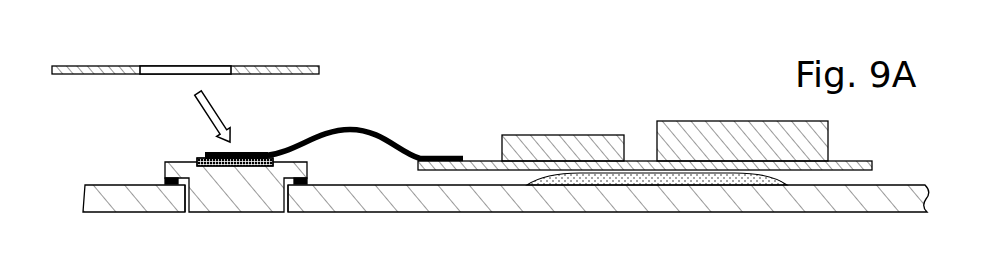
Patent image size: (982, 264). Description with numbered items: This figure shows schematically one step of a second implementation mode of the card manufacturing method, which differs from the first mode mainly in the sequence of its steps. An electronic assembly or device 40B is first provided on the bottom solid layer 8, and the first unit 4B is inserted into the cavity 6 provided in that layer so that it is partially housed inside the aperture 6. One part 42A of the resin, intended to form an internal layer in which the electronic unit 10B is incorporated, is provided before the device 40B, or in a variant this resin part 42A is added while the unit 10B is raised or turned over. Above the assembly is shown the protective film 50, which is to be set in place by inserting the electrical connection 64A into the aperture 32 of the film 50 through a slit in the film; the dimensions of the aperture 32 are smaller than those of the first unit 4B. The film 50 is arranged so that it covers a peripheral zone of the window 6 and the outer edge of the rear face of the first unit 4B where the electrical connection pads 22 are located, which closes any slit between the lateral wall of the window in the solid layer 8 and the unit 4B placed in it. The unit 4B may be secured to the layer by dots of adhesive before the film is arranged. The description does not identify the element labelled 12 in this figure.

The aperture 32 is at (204, 68).
The protective film 50 is at (78, 76).
The electrical connection 64A is at (395, 140).
The electronic assembly or device 40B is at (527, 118).
The electronic unit 10B is at (692, 109).
The cavity 6 is at (182, 203).
The first unit 4B is at (218, 200).
The electrical connection pads 22 is at (246, 168).
The bottom solid layer 8 is at (508, 200).
The resin part 42A is at (632, 178).
The circuit board 12 is at (724, 166).